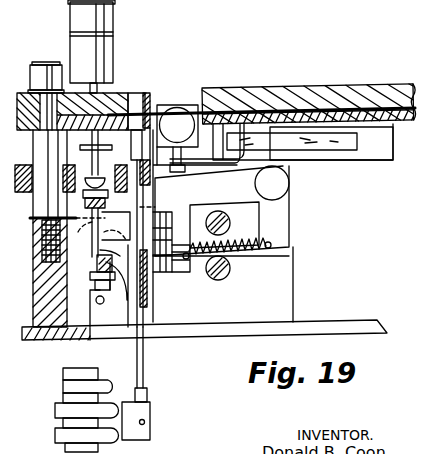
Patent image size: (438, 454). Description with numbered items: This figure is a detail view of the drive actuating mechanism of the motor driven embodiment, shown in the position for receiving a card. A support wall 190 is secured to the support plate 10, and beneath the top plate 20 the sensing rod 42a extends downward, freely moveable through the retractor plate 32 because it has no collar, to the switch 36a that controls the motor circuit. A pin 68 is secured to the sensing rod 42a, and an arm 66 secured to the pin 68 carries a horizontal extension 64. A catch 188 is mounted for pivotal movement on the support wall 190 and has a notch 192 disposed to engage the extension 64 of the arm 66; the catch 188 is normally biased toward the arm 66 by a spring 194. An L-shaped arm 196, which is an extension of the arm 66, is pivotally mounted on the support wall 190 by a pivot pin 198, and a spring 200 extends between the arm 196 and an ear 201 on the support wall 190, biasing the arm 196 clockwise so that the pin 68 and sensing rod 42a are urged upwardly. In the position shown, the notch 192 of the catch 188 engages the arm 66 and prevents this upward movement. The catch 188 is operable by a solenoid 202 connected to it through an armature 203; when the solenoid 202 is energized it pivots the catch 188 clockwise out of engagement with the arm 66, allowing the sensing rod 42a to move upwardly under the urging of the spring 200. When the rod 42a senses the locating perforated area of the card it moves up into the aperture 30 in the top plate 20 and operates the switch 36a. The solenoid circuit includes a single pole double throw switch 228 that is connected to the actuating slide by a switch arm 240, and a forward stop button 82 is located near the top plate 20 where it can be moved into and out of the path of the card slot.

The support plate 10 is at (334, 321).
The top plate 20 is at (290, 89).
The aperture 30 is at (135, 93).
The retractor plate 32 is at (26, 193).
The switch 36a is at (158, 421).
The sensing rod 42a is at (143, 350).
The horizontal extension 64 is at (81, 236).
The arm 66 is at (70, 206).
The pin 68 is at (93, 267).
The forward stop button 82 is at (177, 106).
The catch 188 is at (157, 220).
The support wall 190 is at (289, 300).
The notch 192 is at (100, 198).
The spring 194 is at (97, 281).
The L-shaped arm 196 is at (289, 216).
The pivot pin 198 is at (290, 184).
The spring 200 is at (318, 247).
The ear 201 is at (193, 268).
The solenoid 202 is at (190, 210).
The armature 203 is at (160, 270).
The single pole double throw switch 228 is at (386, 148).
The switch arm 240 is at (340, 150).